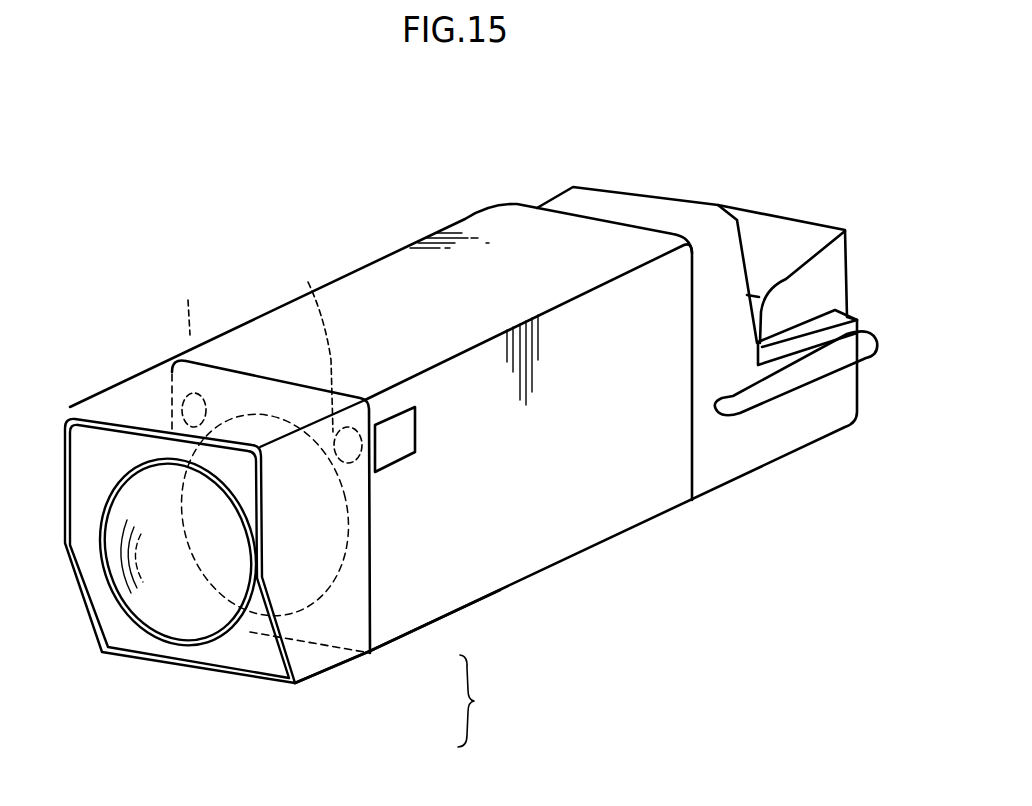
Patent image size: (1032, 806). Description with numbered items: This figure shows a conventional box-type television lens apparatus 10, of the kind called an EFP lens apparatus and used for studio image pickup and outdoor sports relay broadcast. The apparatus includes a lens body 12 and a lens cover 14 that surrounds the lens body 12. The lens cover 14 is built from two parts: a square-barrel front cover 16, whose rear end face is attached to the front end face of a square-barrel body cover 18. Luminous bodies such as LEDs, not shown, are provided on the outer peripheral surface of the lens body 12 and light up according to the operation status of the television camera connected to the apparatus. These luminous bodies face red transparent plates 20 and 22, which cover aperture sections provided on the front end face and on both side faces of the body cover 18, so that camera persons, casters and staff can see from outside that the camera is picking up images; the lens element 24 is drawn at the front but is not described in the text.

The television lens apparatus 10 is at (441, 196).
The lens body 12 is at (130, 456).
The lens cover 14 is at (493, 701).
The front cover 16 is at (325, 667).
The body cover 18 is at (388, 625).
The red transparent plate 20 is at (203, 396).
The red transparent plate 22 is at (394, 434).
The lens 24 is at (185, 623).